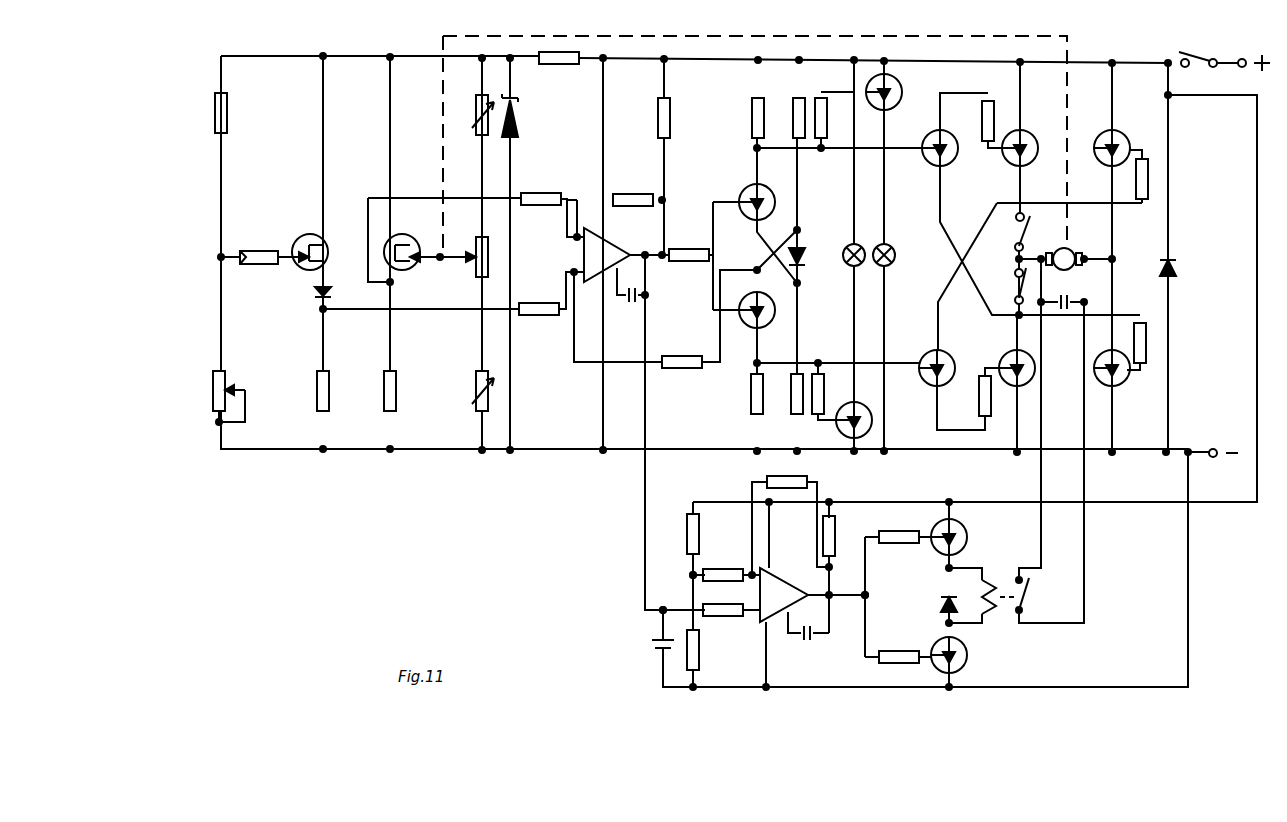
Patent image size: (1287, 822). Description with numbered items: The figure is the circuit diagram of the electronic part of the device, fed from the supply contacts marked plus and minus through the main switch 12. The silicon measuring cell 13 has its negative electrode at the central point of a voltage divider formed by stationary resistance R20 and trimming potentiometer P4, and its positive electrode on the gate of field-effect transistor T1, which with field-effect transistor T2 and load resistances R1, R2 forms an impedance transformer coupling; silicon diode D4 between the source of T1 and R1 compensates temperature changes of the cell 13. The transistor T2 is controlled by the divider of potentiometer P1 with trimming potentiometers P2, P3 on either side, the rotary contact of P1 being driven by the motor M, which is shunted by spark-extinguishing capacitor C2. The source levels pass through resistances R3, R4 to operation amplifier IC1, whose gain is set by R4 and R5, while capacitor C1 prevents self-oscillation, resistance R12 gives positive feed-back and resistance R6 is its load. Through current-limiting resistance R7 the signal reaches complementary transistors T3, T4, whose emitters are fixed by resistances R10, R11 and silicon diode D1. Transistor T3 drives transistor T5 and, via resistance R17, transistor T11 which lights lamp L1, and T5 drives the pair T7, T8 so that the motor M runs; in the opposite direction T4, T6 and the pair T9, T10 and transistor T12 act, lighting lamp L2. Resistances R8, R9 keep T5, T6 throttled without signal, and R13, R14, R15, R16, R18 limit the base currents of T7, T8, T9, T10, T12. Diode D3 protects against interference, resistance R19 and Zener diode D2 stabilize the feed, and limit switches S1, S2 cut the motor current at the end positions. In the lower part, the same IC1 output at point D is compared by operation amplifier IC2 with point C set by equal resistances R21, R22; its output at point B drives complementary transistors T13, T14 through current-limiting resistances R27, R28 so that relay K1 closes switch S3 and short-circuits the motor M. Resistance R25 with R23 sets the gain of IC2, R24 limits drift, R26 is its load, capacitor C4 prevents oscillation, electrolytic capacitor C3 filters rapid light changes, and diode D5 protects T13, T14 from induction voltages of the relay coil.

The main switch 12 is at (1224, 53).
The silicon measuring cell 13 is at (265, 257).
The load resistance R1 is at (313, 391).
The load resistance R2 is at (378, 391).
The resistance R3 is at (539, 301).
The resistance R4 is at (541, 191).
The resistance R5 is at (633, 192).
The load resistance R6 is at (653, 118).
The current-limiting resistance R7 is at (689, 247).
The resistance R8 is at (746, 118).
The resistance R9 is at (745, 394).
The resistance R10 is at (784, 118).
The resistance R11 is at (783, 394).
The resistance R12 is at (682, 354).
The resistance R13 is at (971, 121).
The resistance R14 is at (1126, 343).
The resistance R15 is at (1130, 179).
The resistance R16 is at (968, 396).
The current-limiting resistance R17 is at (836, 118).
The resistance R18 is at (834, 394).
The resistance R19 is at (559, 50).
The stationary resistance R20 is at (237, 113).
The resistance R21 is at (709, 534).
The resistance R22 is at (709, 650).
The resistance R23 is at (723, 567).
The resistance R24 is at (723, 619).
The resistance R25 is at (787, 474).
The load resistance R26 is at (844, 536).
The current-limiting resistance R27 is at (899, 529).
The current-limiting resistance R28 is at (899, 649).
The restoring potentiometer P1 is at (485, 257).
The trimming potentiometer P2 is at (473, 115).
The trimming potentiometer P3 is at (472, 391).
The trimming potentiometer P4 is at (216, 398).
The field-effect transistor T1 is at (303, 244).
The field-effect transistor T2 is at (430, 244).
The NPN-transistor T3 is at (744, 199).
The transistor T4 is at (747, 307).
The PNP-transistor T5 is at (930, 146).
The transistor T6 is at (927, 366).
The transistor T7 is at (1026, 144).
The transistor T8 is at (1105, 364).
The transistor T9 is at (1119, 144).
The transistor T10 is at (1004, 366).
The PNP-transistor T11 is at (899, 91).
The transistor T12 is at (843, 424).
The transistor T13 is at (964, 537).
The transistor T14 is at (964, 655).
The silicon diode D1 is at (809, 257).
The Zener diode D2 is at (521, 115).
The diode D3 is at (1181, 269).
The silicon diode D4 is at (310, 294).
The diode D5 is at (936, 601).
The capacitor C1 is at (630, 288).
The spark-extinguishing capacitor C2 is at (1055, 293).
The electrolytic capacitor C3 is at (655, 635).
The capacitor C4 is at (806, 642).
The lamp L1 is at (893, 247).
The lamp L2 is at (846, 247).
The limit switch S1 is at (1011, 232).
The limit switch S2 is at (1008, 286).
The switch S3 is at (1032, 595).
The relay K1 is at (988, 597).
The motor M is at (1064, 259).
The operation amplifier IC1 is at (600, 258).
The operation amplifier IC2 is at (777, 595).
The point B is at (871, 596).
The point C is at (686, 576).
The point D is at (659, 601).